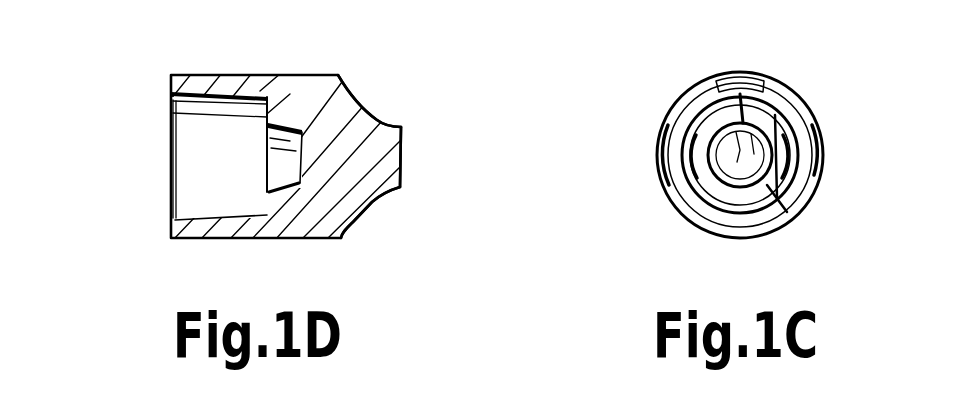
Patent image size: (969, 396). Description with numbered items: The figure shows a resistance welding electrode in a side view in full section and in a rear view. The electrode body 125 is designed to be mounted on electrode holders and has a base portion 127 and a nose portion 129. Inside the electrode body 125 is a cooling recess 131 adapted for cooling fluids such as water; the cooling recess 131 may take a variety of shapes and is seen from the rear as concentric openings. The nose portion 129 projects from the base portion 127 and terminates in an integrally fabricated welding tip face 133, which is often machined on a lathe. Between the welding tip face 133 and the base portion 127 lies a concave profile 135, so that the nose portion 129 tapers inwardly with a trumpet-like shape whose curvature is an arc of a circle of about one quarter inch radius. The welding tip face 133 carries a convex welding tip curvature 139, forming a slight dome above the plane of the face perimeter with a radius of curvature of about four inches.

In FIG. 1D, the electrode body 125 is at (228, 56).
In FIG. 1C, the electrode body 125 is at (757, 62).
In FIG. 1D, the base portion 127 is at (300, 82).
In FIG. 1C, the base portion 127 is at (787, 90).
In FIG. 1D, the nose portion 129 is at (372, 178).
In FIG. 1D, the cooling recess 131 is at (220, 155).
In FIG. 1C, the cooling recess 131 is at (786, 210).
In FIG. 1D, the welding tip face 133 is at (406, 128).
In FIG. 1D, the concave profile 135 is at (357, 107).
In FIG. 1D, the convex welding tip curvature 139 is at (410, 172).